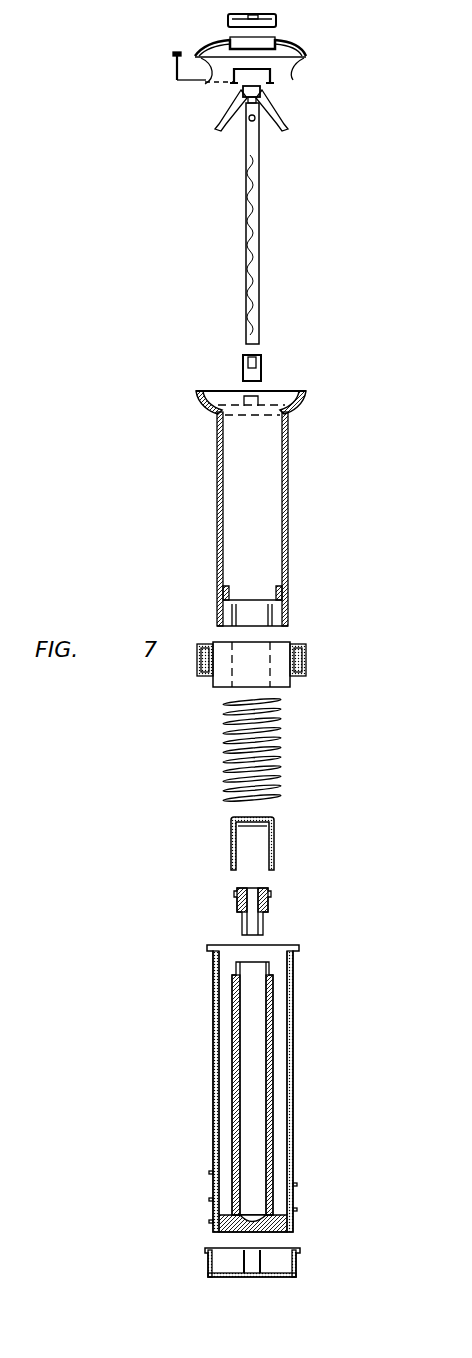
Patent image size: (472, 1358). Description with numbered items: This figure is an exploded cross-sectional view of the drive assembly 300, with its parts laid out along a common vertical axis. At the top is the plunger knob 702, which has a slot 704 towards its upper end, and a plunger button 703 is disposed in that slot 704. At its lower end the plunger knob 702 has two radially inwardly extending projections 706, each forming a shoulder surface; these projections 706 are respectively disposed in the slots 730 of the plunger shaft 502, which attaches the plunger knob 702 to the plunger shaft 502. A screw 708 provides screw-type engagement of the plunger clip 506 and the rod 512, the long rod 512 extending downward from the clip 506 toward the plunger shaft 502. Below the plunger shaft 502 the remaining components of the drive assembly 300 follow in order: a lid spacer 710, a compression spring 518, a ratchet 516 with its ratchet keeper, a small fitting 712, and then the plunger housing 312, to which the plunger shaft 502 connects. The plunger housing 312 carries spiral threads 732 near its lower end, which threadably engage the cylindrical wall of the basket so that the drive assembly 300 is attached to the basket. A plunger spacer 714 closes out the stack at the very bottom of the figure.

The drive assembly 300 is at (171, 246).
The plunger housing 312 is at (293, 1033).
The plunger shaft 502 is at (288, 472).
The plunger clip 506 is at (277, 113).
The rod 512 is at (259, 198).
The ratchet 516 is at (274, 847).
The compression spring 518 is at (281, 753).
The plunger knob 702 is at (307, 53).
The plunger button 703 is at (277, 22).
The slot 704 is at (268, 44).
The radially inwardly extending projections 706 is at (210, 83).
The screw 708 is at (172, 60).
The lid spacer 710 is at (303, 642).
The fitting 712 is at (270, 900).
The plunger spacer 714 is at (298, 1255).
The slots 730 is at (196, 392).
The spiral threads 732 is at (297, 1185).